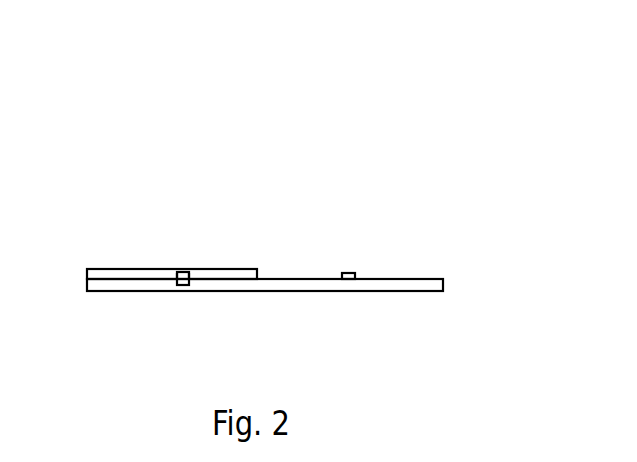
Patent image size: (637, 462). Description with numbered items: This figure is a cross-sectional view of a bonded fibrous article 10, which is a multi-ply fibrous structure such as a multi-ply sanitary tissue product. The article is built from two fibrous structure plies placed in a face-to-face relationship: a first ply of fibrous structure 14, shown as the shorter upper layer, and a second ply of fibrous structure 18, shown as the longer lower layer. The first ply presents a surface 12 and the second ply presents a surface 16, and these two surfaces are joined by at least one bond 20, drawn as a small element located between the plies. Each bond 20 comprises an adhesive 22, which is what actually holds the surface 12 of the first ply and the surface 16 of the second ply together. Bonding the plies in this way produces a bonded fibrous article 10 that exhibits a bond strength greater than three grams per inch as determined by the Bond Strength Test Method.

The bonded fibrous article 10 is at (250, 91).
The surface of the first ply 12 is at (152, 280).
The first ply of fibrous structure 14 is at (122, 274).
The surface of the second ply 16 is at (302, 278).
The second ply of fibrous structure 18 is at (444, 283).
The bond 20 is at (184, 287).
The adhesive 22 is at (178, 272).